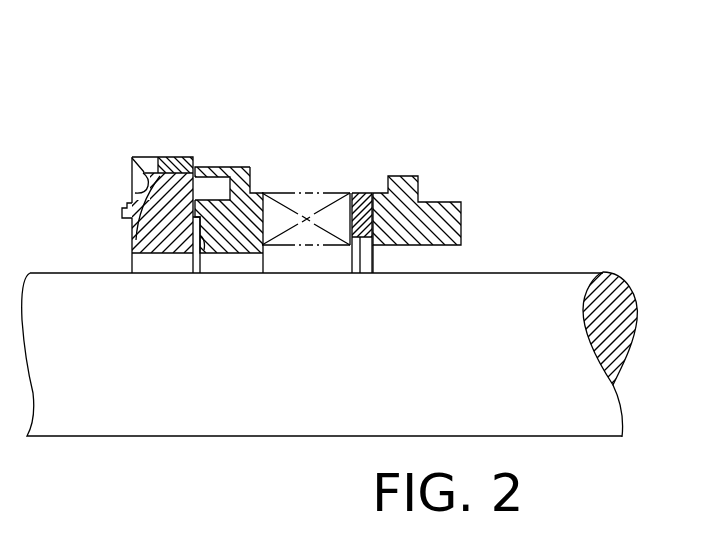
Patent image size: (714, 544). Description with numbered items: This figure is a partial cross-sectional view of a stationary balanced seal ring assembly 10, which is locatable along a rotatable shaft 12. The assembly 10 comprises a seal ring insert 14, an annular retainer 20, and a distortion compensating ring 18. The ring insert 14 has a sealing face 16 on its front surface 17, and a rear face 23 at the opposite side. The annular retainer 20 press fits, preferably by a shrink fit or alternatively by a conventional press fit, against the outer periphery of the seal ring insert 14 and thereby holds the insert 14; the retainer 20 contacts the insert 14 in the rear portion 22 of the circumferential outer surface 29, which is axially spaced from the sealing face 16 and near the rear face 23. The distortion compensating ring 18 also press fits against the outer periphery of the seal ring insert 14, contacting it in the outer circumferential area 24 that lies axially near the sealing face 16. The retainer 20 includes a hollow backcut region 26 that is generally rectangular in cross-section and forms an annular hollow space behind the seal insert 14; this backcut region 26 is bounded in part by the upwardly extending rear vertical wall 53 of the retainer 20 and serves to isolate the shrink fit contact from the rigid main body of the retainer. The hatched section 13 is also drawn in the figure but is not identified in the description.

The balanced seal ring assembly 10 is at (254, 86).
The rotatable shaft 12 is at (268, 424).
The bearing housing 13 is at (329, 234).
The seal ring insert 14 is at (153, 252).
The sealing face 16 is at (123, 207).
The front surface 17 is at (131, 226).
The distortion compensating ring 18 is at (141, 157).
The annular retainer 20 is at (258, 262).
The rear portion 22 is at (219, 177).
The rear face 23 is at (217, 250).
The outer circumferential area 24 is at (134, 188).
The backcut region 26 is at (229, 170).
The circumferential outer surface 29 is at (137, 237).
The rear vertical wall 53 is at (250, 185).